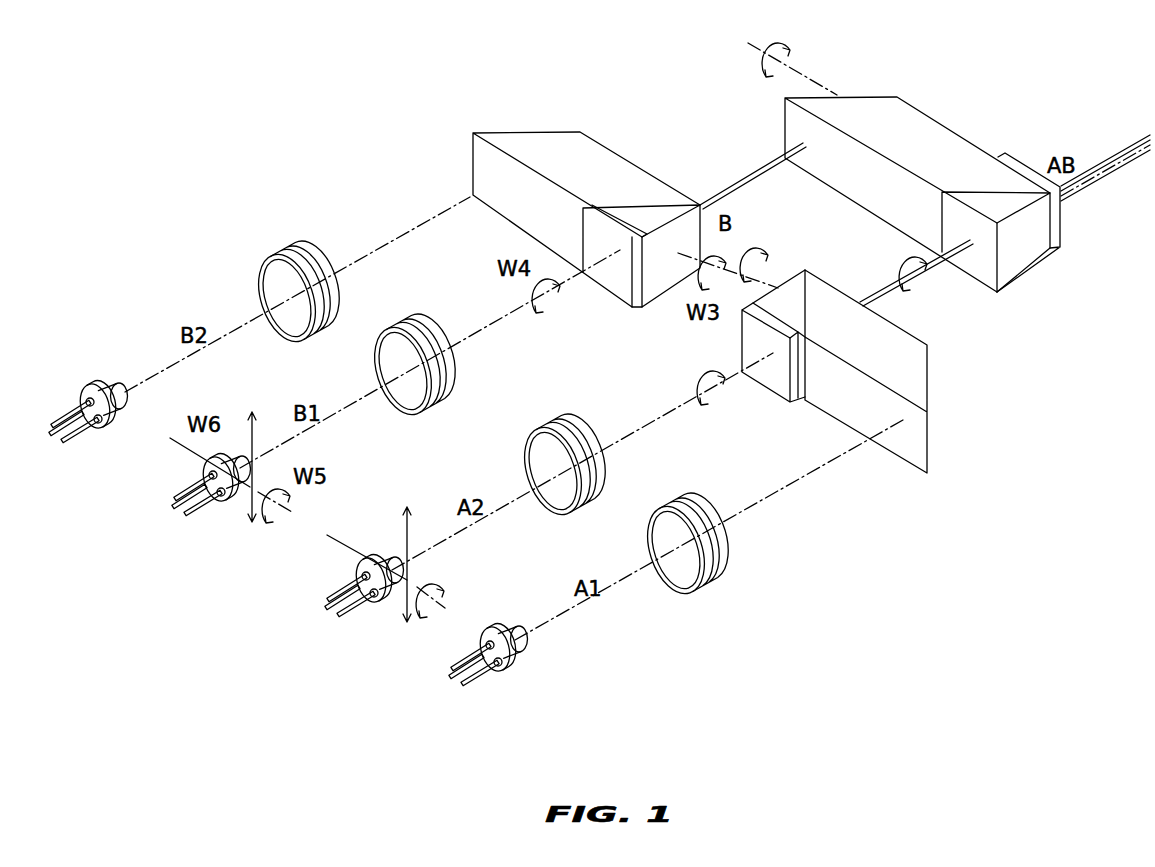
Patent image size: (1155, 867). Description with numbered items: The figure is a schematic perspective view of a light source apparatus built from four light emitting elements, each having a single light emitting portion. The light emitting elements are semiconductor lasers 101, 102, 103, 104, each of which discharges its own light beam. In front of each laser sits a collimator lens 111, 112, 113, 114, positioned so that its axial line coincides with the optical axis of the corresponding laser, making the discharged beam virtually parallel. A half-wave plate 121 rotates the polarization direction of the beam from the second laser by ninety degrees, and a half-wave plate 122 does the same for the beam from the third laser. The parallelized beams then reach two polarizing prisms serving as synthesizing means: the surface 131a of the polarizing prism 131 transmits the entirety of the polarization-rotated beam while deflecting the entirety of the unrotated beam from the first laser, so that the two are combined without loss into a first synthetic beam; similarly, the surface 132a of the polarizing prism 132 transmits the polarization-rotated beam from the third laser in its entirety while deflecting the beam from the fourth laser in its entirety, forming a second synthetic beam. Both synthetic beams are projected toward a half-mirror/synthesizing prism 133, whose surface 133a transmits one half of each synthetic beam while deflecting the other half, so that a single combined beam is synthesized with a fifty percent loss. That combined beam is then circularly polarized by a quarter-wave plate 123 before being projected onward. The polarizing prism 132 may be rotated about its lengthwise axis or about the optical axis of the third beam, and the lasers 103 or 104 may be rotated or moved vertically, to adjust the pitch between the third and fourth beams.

The semiconductor laser 101 is at (507, 677).
The semiconductor laser 102 is at (387, 607).
The semiconductor laser 103 is at (228, 507).
The semiconductor laser 104 is at (102, 438).
The collimator lens 111 is at (703, 592).
The collimator lens 112 is at (582, 515).
The collimator lens 113 is at (427, 415).
The collimator lens 114 is at (308, 345).
The half-wave plate 121 is at (783, 387).
The half-wave plate 122 is at (625, 295).
The quarter-wave plate 123 is at (1062, 250).
The polarizing prism 131 is at (906, 357).
The surface of prism 131 131a is at (800, 293).
The polarizing prism 132 is at (553, 142).
The surface of prism 132 132a is at (655, 205).
The half-mirror/synthesizing prism 133 is at (887, 112).
The surface of half-mirror 133 133a is at (1005, 192).